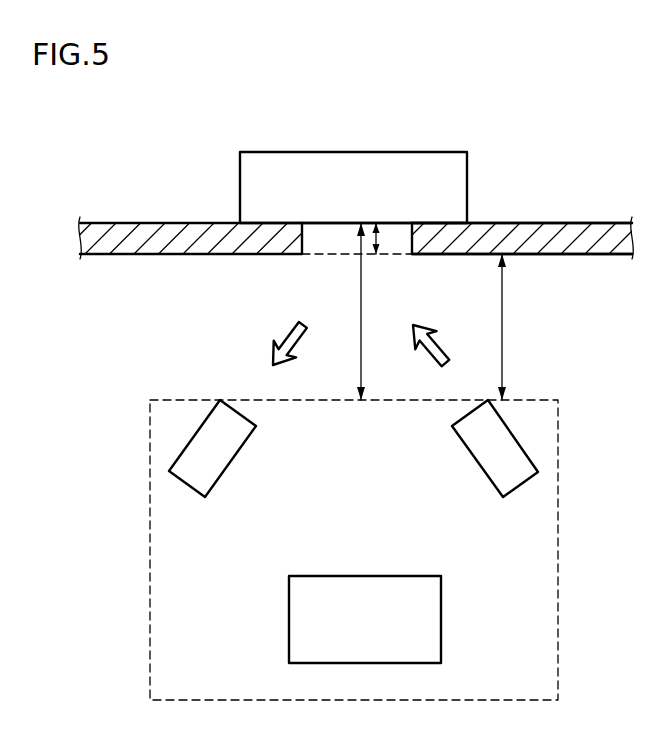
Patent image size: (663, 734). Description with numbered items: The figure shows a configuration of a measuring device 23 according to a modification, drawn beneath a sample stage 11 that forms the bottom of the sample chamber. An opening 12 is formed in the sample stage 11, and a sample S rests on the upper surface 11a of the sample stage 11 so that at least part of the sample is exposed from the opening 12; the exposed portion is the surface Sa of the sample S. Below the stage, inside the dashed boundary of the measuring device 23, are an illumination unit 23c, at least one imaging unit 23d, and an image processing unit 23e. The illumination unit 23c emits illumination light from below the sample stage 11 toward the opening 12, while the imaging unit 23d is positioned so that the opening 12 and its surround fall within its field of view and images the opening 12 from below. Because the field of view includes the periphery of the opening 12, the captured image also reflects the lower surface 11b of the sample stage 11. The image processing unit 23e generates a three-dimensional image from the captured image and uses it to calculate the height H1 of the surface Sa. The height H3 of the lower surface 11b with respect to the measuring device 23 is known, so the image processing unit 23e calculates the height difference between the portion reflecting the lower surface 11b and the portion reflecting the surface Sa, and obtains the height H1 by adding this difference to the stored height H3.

The sample S is at (443, 162).
The surface of the sample Sa is at (323, 224).
The sample stage 11 is at (598, 248).
The upper surface of the sample stage 11a is at (567, 222).
The lower surface of the sample stage 11b is at (545, 256).
The opening 12 is at (405, 254).
The height of the surface of the sample H1 is at (363, 350).
The height of the lower surface of the sample stage H3 is at (503, 350).
The measuring device 23 is at (560, 452).
The illumination unit 23c is at (490, 462).
The imaging unit 23d is at (214, 472).
The image processing unit 23e is at (392, 663).